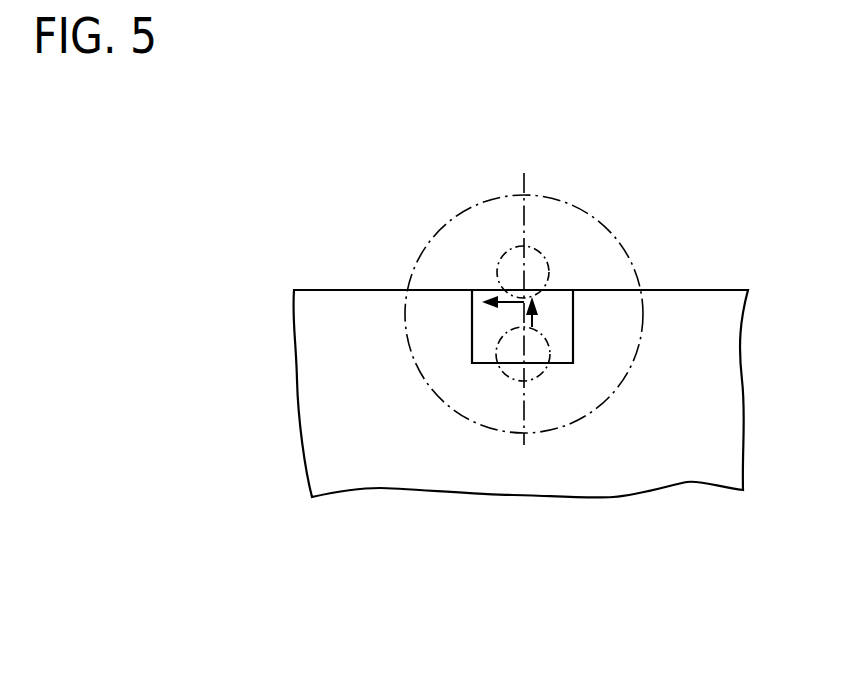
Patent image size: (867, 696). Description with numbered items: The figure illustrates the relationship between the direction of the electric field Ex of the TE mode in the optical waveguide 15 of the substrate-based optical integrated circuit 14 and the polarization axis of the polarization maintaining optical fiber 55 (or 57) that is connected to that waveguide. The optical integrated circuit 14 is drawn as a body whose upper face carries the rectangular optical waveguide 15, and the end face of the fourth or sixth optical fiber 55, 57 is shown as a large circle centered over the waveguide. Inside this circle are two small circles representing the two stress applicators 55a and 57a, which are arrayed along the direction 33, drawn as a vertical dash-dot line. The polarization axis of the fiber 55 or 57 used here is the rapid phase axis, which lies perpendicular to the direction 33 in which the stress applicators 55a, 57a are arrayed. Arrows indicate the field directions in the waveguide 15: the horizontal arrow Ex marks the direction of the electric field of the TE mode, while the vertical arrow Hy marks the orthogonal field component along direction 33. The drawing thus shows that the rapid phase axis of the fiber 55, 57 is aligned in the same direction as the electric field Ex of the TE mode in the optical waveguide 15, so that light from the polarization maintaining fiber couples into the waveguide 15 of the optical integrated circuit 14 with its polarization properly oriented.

The optical integrated circuit 14 is at (350, 290).
The optical waveguide 15 is at (472, 327).
The polarization axis 33 is at (523, 225).
The fourth optical fiber 55 is at (583, 303).
The sixth optical fiber 57 is at (613, 235).
The stress applicators 55a is at (599, 343).
The stress applicators 57a is at (543, 252).
The vertical direction Hy is at (537, 323).
The electric field of the TE mode Ex is at (503, 305).